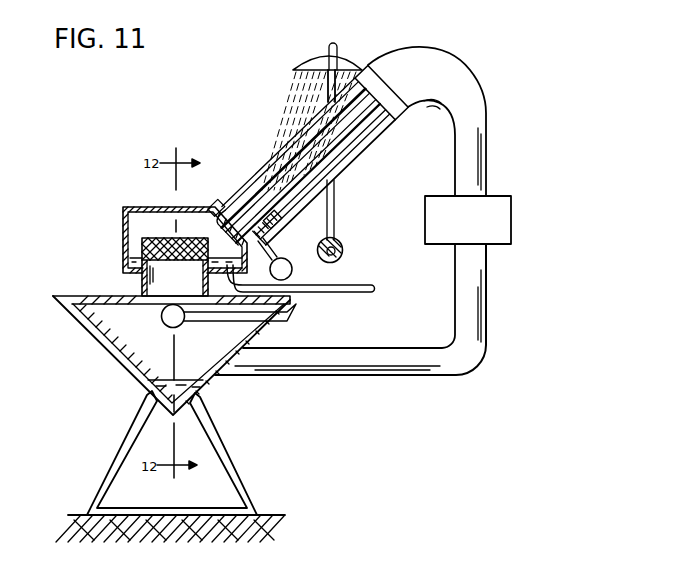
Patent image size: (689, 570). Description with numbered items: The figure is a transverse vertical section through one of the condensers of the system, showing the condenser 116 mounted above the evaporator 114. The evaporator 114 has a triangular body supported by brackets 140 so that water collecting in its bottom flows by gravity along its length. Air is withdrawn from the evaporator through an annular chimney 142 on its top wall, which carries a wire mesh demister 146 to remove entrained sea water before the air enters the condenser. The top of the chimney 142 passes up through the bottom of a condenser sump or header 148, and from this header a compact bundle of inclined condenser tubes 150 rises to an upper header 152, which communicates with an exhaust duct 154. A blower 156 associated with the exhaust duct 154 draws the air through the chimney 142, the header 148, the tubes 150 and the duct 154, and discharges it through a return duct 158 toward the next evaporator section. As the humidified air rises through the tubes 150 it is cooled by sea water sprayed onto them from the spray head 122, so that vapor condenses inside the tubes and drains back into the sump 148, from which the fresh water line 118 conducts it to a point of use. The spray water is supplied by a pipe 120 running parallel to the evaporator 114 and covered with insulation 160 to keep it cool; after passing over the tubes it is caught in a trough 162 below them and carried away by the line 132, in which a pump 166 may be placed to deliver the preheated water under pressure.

The evaporator 114 is at (82, 326).
The condenser 116 is at (257, 96).
The fresh water line 118 is at (318, 292).
The pipe 120 is at (343, 253).
The spray head 122 is at (316, 64).
The line 132 is at (287, 333).
The brackets 140 is at (240, 468).
The chimney 142 is at (142, 283).
The wire mesh demister 146 is at (143, 240).
The condenser sump or header 148 is at (150, 207).
The condenser tubes 150 is at (272, 182).
The header 152 is at (367, 66).
The exhaust duct 154 is at (460, 63).
The blower or exhaust fan 156 is at (511, 237).
The return duct 158 is at (486, 340).
The insulation 160 is at (336, 229).
The trough 162 is at (349, 172).
The pump 166 is at (292, 272).